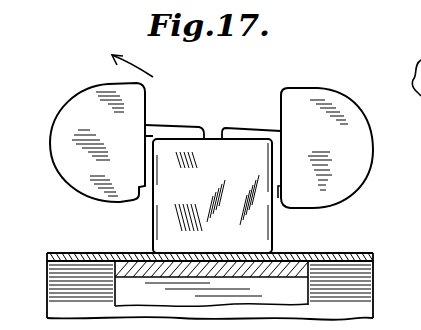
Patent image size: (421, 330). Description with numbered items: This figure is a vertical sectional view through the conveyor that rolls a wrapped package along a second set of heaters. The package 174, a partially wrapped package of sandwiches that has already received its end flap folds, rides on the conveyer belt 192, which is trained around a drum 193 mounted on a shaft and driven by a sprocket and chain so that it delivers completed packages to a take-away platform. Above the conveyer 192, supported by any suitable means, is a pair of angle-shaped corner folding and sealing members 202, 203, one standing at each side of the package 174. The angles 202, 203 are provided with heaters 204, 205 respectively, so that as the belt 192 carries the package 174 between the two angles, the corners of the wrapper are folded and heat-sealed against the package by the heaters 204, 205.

The package 174 is at (207, 158).
The conveyer belt 192 is at (343, 258).
The drum 193 is at (360, 286).
The angle-shaped corner folding and sealing member 202 is at (139, 200).
The angle-shaped corner folding and sealing member 203 is at (281, 199).
The heater 204 is at (80, 96).
The heater 205 is at (336, 108).